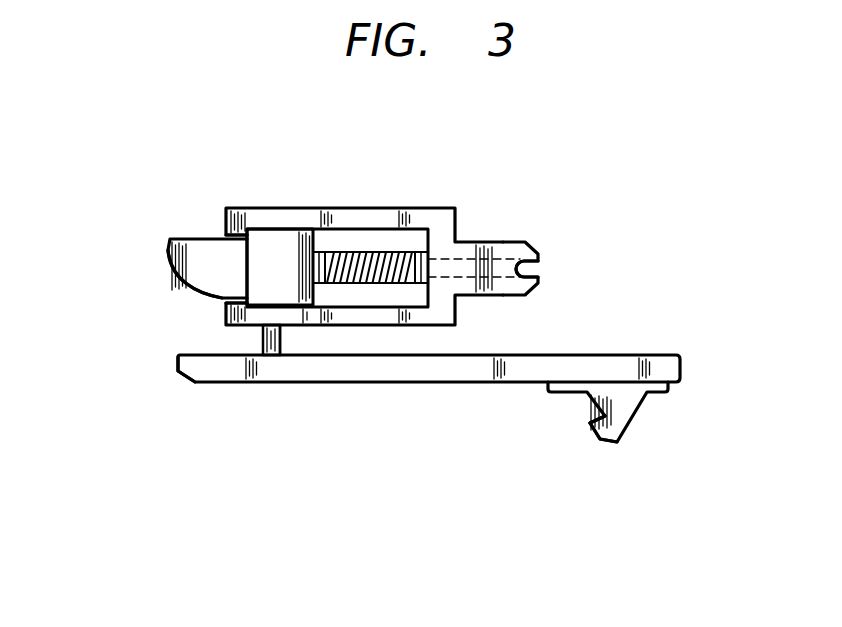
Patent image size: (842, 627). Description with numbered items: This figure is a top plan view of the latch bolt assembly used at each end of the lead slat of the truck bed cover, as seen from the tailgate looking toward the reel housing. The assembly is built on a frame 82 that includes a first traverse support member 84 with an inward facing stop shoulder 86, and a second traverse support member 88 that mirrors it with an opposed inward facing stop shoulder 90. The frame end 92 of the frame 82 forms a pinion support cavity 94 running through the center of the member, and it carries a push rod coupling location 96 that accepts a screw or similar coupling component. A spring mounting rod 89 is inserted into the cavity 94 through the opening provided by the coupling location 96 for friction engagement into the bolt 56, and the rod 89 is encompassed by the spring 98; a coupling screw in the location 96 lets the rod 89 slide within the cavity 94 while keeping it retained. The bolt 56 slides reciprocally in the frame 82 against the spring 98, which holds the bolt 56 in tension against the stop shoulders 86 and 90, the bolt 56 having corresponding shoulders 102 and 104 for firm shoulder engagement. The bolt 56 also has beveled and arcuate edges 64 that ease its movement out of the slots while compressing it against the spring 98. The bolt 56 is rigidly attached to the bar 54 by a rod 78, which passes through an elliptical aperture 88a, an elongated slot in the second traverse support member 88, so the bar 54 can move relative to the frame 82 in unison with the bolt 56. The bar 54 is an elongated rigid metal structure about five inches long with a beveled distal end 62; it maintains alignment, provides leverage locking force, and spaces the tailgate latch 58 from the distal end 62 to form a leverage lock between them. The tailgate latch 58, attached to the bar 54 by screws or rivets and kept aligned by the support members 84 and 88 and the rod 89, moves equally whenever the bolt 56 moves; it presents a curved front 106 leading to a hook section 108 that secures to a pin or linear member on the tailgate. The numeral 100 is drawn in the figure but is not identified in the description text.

The bar 54 is at (217, 370).
The bolt 56 is at (170, 246).
The tailgate latch 58 is at (623, 427).
The beveled distal end 62 is at (182, 373).
The beveled and arcuate edges 64 is at (190, 284).
The rod 78 is at (283, 327).
The frame 82 is at (300, 203).
The first traverse support member 84 is at (308, 217).
The stop shoulder 86 is at (226, 210).
The second traverse support member 88 is at (318, 310).
The elliptical aperture 88a is at (305, 310).
The spring mounting rod 89 is at (460, 240).
The stop shoulder 90 is at (228, 312).
The frame end 92 is at (503, 247).
The pinion support cavity 94 is at (500, 270).
The push rod coupling location 96 is at (538, 268).
The spring 98 is at (366, 228).
The cavity 100 is at (333, 310).
The shoulder 102 is at (283, 228).
The shoulder 104 is at (262, 328).
The curved front 106 is at (602, 440).
The hook section 108 is at (583, 418).